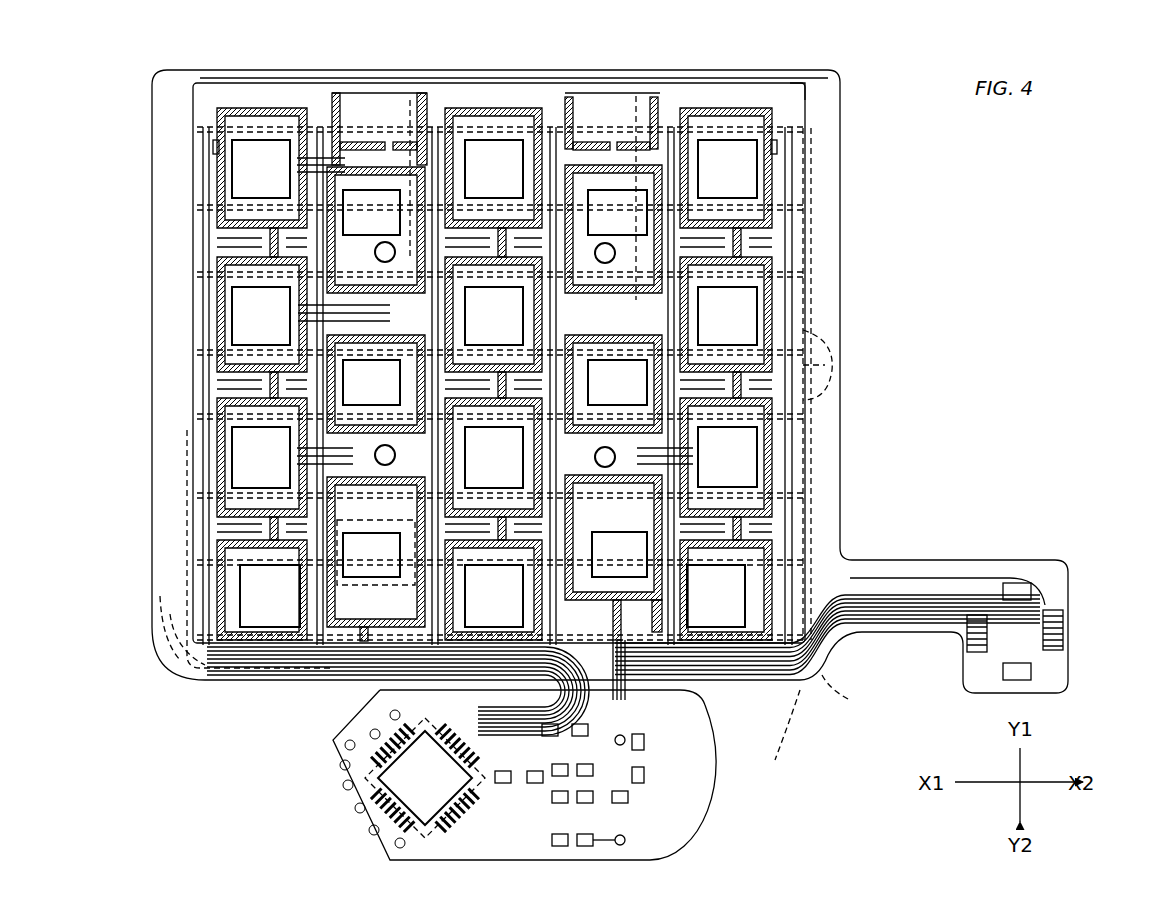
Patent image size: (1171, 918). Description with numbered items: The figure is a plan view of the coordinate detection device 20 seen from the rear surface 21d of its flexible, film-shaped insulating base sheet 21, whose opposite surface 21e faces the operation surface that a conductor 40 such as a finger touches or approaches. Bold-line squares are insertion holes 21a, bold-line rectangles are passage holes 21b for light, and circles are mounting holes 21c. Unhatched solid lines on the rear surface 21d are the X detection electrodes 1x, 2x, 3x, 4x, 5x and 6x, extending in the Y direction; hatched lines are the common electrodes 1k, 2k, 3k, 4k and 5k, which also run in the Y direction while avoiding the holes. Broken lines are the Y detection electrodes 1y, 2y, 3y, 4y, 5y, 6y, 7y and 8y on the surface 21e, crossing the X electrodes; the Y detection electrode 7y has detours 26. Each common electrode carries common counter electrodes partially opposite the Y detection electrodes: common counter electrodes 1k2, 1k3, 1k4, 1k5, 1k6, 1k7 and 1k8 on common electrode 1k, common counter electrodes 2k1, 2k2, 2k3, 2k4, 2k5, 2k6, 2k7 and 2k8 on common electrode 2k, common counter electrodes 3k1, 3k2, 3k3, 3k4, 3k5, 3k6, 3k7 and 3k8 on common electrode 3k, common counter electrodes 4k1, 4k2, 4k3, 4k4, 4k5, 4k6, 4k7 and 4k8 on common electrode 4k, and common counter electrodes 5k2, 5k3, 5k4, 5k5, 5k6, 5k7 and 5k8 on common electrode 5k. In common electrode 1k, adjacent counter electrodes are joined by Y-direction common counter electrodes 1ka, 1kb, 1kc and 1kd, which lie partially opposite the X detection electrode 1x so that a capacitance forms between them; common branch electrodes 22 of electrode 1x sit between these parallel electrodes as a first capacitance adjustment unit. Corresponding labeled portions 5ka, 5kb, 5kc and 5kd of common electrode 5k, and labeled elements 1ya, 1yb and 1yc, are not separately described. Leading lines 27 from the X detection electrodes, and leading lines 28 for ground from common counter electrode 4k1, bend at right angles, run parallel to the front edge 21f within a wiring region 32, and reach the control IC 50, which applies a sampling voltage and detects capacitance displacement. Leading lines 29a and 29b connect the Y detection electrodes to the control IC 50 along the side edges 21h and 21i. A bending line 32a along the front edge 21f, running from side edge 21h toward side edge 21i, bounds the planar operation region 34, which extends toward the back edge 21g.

The coordinate detection device 20 is at (845, 72).
The base sheet 21 is at (172, 78).
The insertion holes 21a is at (494, 383).
The passage holes 21b is at (550, 385).
The mounting holes 21c is at (393, 245).
The rear surface 21d is at (838, 90).
The surface 21e is at (828, 125).
The front edge 21f is at (722, 692).
The back edge 21g is at (618, 90).
The side edge 21h is at (152, 172).
The side edge 21i is at (840, 200).
The common branch electrodes 22 is at (270, 385).
The detours 26 is at (412, 98).
The leading lines 27 is at (330, 668).
The leading lines for ground 28 is at (625, 800).
The leading lines 29a is at (255, 690).
The leading lines 29b is at (830, 370).
The wiring region 32 is at (842, 662).
The bending line 32a is at (848, 640).
The operation region 34 is at (805, 464).
The conductor 40 is at (552, 72).
The control IC 50 is at (335, 798).
The X detection electrode 1x is at (205, 110).
The X detection electrode 2x is at (320, 110).
The X detection electrode 3x is at (436, 110).
The X detection electrode 4x is at (553, 110).
The X detection electrode 5x is at (672, 110).
The X detection electrode 6x is at (790, 110).
The Y detection electrode 1y is at (197, 637).
The Y detection electrode 2y is at (197, 562).
The Y detection electrode 3y is at (197, 495).
The Y detection electrode 4y is at (197, 417).
The Y detection electrode 5y is at (197, 352).
The Y detection electrode 6y is at (197, 274).
The Y detection electrode 7y is at (197, 208).
The Y detection electrode 8y is at (197, 129).
The Y electrode lead 1ya is at (160, 596).
The Y electrode lead 1yb is at (853, 693).
The Y electrode lead 1yc is at (170, 614).
The common electrode 1k is at (240, 104).
The common counter electrode 1k2 is at (240, 532).
The common counter electrode 1k3 is at (240, 524).
The common counter electrode 1k4 is at (240, 389).
The common counter electrode 1k5 is at (240, 380).
The common counter electrode 1k6 is at (240, 247).
The common counter electrode 1k7 is at (240, 238).
The common counter electrode 1k8 is at (270, 106).
The common counter electrode 1ka is at (213, 148).
The common counter electrode 1kb is at (217, 300).
The common counter electrode 1kc is at (217, 462).
The common counter electrode 1kd is at (205, 675).
The common electrode 2k is at (350, 104).
The common counter electrode 2k1 is at (362, 645).
The common counter electrode 2k2 is at (376, 552).
The common counter electrode 2k3 is at (376, 552).
The common counter electrode 2k4 is at (300, 452).
The common counter electrode 2k5 is at (493, 314).
The common counter electrode 2k6 is at (376, 230).
The common counter electrode 2k7 is at (379, 127).
The common counter electrode 2k8 is at (380, 100).
The common electrode 3k is at (472, 104).
The electrode segment 3k1 is at (493, 590).
The common counter electrode 3k2 is at (495, 525).
The common counter electrode 3k3 is at (493, 526).
The common counter electrode 3k4 is at (493, 457).
The common counter electrode 3k5 is at (495, 386).
The common counter electrode 3k6 is at (495, 243).
The common counter electrode 3k7 is at (493, 242).
The common counter electrode 3k8 is at (500, 106).
The common electrode 4k is at (592, 100).
The common counter electrode 4k1 is at (640, 700).
The common counter electrode 4k2 is at (665, 590).
The common counter electrode 4k3 is at (613, 537).
The common counter electrode 4k4 is at (690, 452).
The common counter electrode 4k5 is at (662, 395).
The common counter electrode 4k6 is at (662, 250).
The common counter electrode 4k7 is at (607, 121).
The common counter electrode 4k8 is at (652, 96).
The common electrode 5k is at (720, 104).
The common counter electrode 5k2 is at (745, 534).
The common counter electrode 5k3 is at (745, 524).
The common counter electrode 5k4 is at (745, 392).
The common counter electrode 5k5 is at (745, 380).
The common counter electrode 5k6 is at (745, 250).
The common counter electrode 5k7 is at (745, 238).
The common counter electrode 5k8 is at (740, 106).
The electrode frame 5ka is at (777, 148).
The electrode frame 5kb is at (772, 300).
The electrode frame 5kc is at (772, 465).
The electrode frame 5kd is at (790, 685).